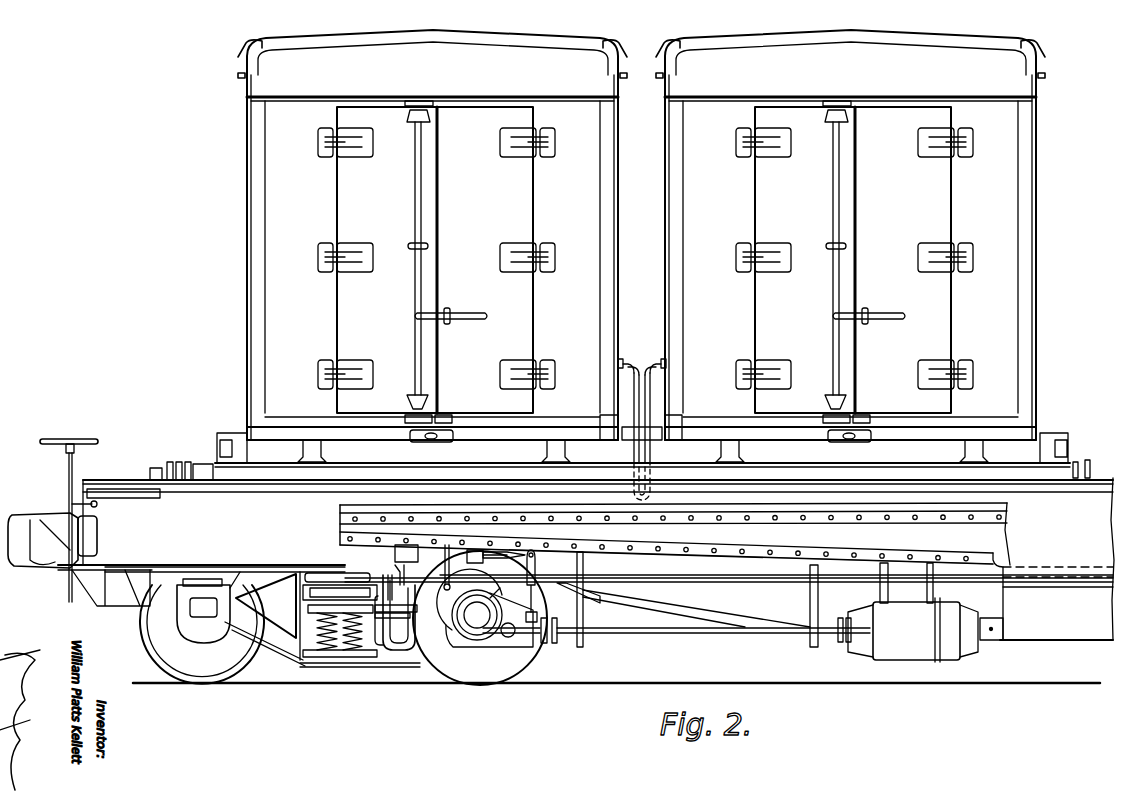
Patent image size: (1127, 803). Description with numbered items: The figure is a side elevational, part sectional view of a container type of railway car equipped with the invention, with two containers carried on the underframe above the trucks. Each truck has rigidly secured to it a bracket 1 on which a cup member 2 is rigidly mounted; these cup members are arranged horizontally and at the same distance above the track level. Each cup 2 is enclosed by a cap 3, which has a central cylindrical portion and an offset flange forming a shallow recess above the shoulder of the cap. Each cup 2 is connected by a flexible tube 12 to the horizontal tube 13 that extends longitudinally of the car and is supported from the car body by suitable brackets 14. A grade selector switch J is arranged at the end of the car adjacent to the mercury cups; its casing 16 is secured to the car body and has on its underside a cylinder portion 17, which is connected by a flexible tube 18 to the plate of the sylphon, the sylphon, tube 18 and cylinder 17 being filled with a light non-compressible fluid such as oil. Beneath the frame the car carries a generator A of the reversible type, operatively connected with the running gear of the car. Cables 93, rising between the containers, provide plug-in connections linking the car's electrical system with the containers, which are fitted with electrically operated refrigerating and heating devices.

The cables 93 is at (642, 418).
The grade selector switch J is at (347, 546).
The bracket 1 is at (372, 651).
The cup member 2 is at (388, 616).
The cap 3 is at (386, 641).
The flexible tube 12 is at (417, 628).
The horizontal tube 13 is at (442, 578).
The brackets 14 is at (445, 554).
The casing 16 is at (403, 572).
The cylinder portion 17 is at (399, 571).
The flexible tube 18 is at (392, 576).
The generator A is at (920, 612).